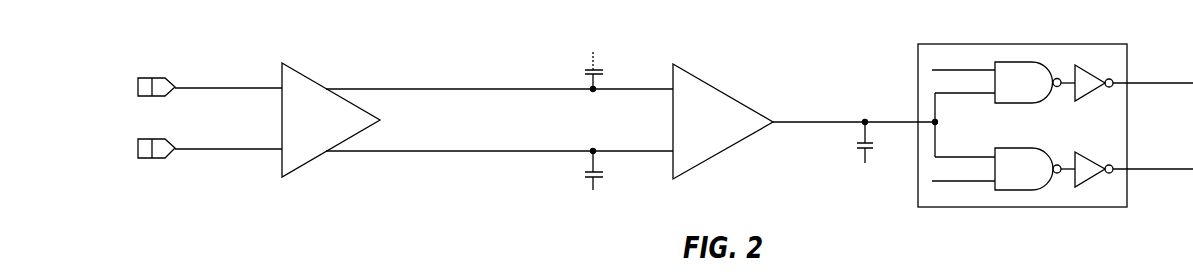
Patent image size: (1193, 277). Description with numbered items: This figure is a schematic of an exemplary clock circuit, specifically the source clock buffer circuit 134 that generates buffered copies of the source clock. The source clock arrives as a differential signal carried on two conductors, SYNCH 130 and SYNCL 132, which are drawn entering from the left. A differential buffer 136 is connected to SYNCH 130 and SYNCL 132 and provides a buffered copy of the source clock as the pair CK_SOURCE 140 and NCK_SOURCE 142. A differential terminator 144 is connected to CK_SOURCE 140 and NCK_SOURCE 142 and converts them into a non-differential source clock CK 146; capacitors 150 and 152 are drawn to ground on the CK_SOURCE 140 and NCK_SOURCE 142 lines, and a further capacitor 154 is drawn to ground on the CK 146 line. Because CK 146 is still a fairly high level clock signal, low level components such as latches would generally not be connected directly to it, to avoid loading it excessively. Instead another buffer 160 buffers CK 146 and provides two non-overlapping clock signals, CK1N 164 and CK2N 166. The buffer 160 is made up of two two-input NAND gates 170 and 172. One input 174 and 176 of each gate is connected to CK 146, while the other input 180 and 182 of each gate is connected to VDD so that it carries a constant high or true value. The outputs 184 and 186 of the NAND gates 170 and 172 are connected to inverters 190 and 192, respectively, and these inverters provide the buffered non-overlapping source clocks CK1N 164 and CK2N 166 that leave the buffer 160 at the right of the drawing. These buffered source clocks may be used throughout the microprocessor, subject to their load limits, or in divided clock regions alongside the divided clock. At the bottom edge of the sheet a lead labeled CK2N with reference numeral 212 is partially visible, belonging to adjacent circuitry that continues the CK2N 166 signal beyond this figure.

The SYNCH 130 is at (217, 90).
The SYNCL 132 is at (217, 152).
The source clock buffer circuit 134 is at (338, 54).
The differential buffer 136 is at (310, 160).
The CK_SOURCE 140 is at (465, 91).
The NCK_SOURCE 142 is at (465, 153).
The differential terminator 144 is at (698, 165).
The CK 146 is at (780, 124).
The capacitor 150 is at (600, 76).
The capacitor 152 is at (600, 172).
The capacitor 154 is at (873, 143).
The buffer 160 is at (917, 82).
The CK1N 164 is at (1140, 87).
The CK2N 166 is at (1140, 175).
The 2-input NAND gate 170 is at (1012, 103).
The 2-input NAND gate 172 is at (1012, 148).
The input 174 is at (987, 97).
The input 176 is at (987, 155).
The input 180 is at (982, 70).
The input 182 is at (982, 182).
The output 184 is at (1060, 78).
The output 186 is at (1062, 175).
The inverter 190 is at (1092, 98).
The inverter 192 is at (1103, 142).
The CK2N signal line 212 is at (420, 276).